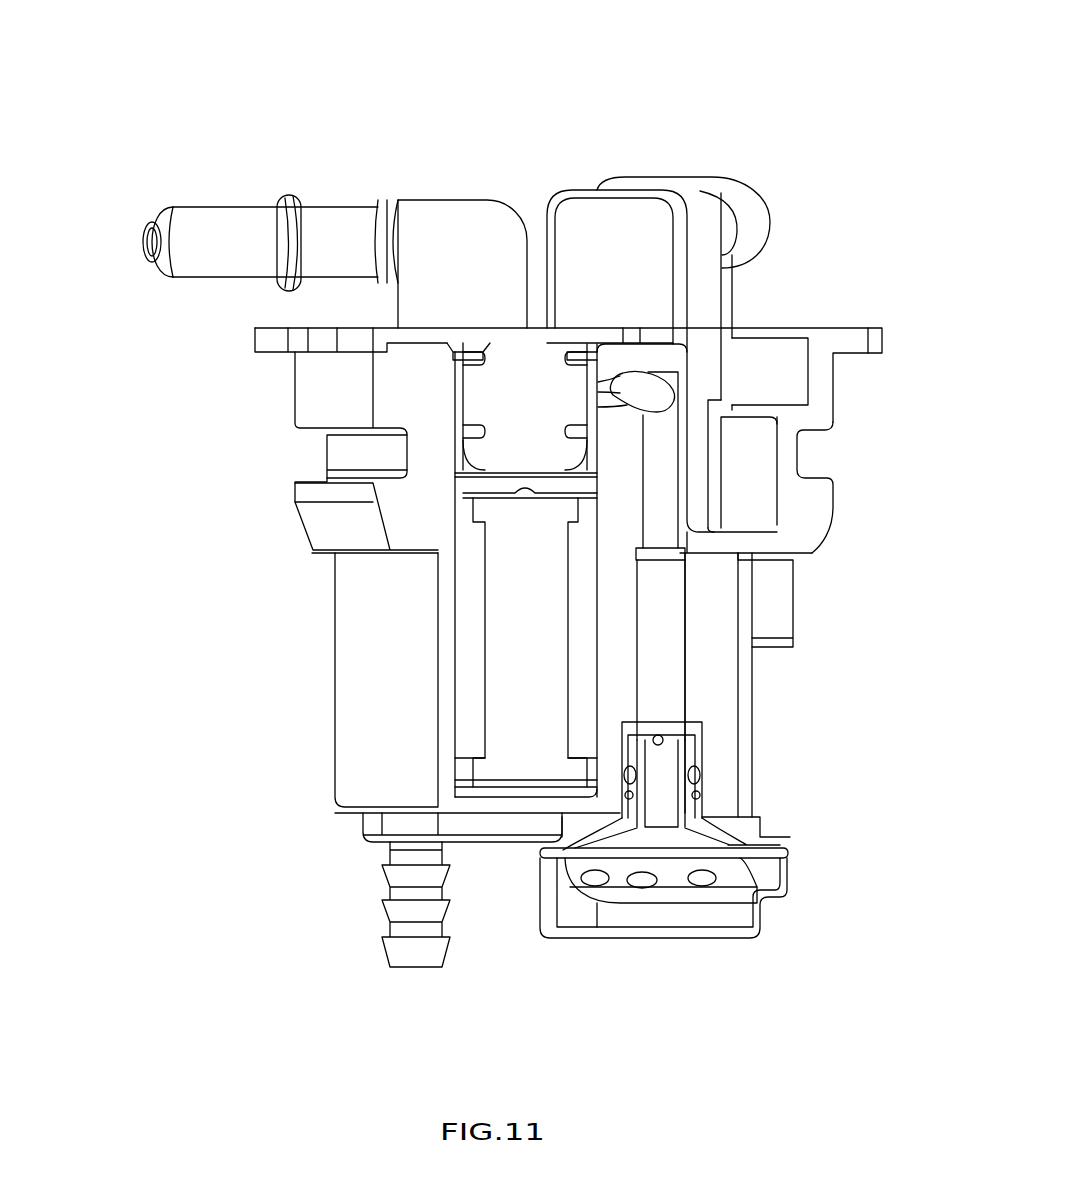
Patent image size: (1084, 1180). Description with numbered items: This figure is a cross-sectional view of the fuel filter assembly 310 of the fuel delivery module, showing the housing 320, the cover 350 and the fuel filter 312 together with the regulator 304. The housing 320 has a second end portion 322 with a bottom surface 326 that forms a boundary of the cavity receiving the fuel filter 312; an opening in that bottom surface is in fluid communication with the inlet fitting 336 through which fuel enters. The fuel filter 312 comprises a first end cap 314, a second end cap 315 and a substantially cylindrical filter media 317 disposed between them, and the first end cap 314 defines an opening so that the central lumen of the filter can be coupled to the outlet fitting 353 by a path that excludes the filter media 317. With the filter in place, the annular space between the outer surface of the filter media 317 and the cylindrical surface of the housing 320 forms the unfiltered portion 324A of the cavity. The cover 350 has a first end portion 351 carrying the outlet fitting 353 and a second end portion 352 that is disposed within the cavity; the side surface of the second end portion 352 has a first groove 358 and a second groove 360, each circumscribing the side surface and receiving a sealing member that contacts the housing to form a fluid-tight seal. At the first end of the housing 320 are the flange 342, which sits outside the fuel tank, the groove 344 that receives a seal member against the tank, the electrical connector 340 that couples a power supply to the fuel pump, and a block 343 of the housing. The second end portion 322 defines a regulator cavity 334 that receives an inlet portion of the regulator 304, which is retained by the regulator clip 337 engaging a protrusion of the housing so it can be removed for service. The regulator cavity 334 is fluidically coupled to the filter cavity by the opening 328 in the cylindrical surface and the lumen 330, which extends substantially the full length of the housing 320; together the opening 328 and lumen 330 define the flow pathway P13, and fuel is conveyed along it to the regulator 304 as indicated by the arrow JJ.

The fuel filter assembly 310 is at (110, 123).
The outlet fitting 353 is at (245, 215).
The first end portion of the cover 351 is at (388, 298).
The cover 350 is at (410, 176).
The electrical connector 340 is at (708, 182).
The flange 342 is at (257, 338).
The flange block 343 is at (300, 388).
The groove 344 is at (318, 453).
The second end portion of the cover 352 is at (480, 453).
The opening 328 is at (592, 397).
The first groove 358 is at (588, 357).
The second groove 360 is at (588, 436).
The arrow JJ is at (662, 525).
The flow pathway P13 is at (672, 543).
The lumen 330 is at (672, 565).
The first end cap 314 is at (570, 530).
The filter media 317 is at (557, 658).
The fuel filter 312 is at (498, 627).
The housing 320 is at (353, 668).
The unfiltered portion of the cavity 324A is at (468, 732).
The second end portion of the housing 322 is at (345, 785).
The second end cap 315 is at (470, 760).
The bottom surface 326 is at (502, 792).
The inlet fitting 336 is at (413, 927).
The regulator cavity 334 is at (672, 734).
The regulator 304 is at (723, 857).
The regulator clip 337 is at (618, 930).